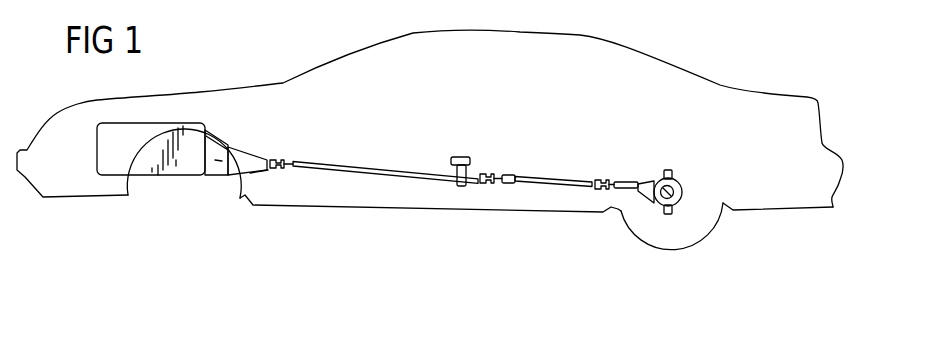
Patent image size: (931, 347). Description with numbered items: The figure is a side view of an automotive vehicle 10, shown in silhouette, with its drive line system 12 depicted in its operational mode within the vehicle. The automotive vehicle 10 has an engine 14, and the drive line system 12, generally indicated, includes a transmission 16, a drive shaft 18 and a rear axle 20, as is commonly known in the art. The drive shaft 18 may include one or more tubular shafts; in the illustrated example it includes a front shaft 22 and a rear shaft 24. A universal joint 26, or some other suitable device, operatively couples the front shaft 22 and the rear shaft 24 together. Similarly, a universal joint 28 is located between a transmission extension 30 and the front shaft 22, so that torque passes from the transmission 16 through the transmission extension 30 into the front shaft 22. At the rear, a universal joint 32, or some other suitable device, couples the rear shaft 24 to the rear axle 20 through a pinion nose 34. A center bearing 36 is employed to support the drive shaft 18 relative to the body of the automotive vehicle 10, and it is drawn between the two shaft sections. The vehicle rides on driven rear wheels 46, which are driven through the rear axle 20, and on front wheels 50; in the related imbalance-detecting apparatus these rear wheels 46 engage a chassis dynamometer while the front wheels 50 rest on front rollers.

The automotive vehicle 10 is at (430, 132).
The drive line system 12 is at (509, 165).
The engine 14 is at (128, 130).
The transmission 16 is at (222, 147).
The drive shaft 18 is at (385, 159).
The rear axle 20 is at (684, 184).
The front shaft 22 is at (390, 181).
The rear shaft 24 is at (555, 188).
The universal joint 26 is at (495, 174).
The universal joint 28 is at (288, 160).
The transmission extension 30 is at (257, 175).
The universal joint 32 is at (608, 179).
The pinion nose 34 is at (627, 196).
The center bearing 36 is at (470, 187).
The rear wheels 46 is at (717, 216).
The front wheels 50 is at (135, 214).